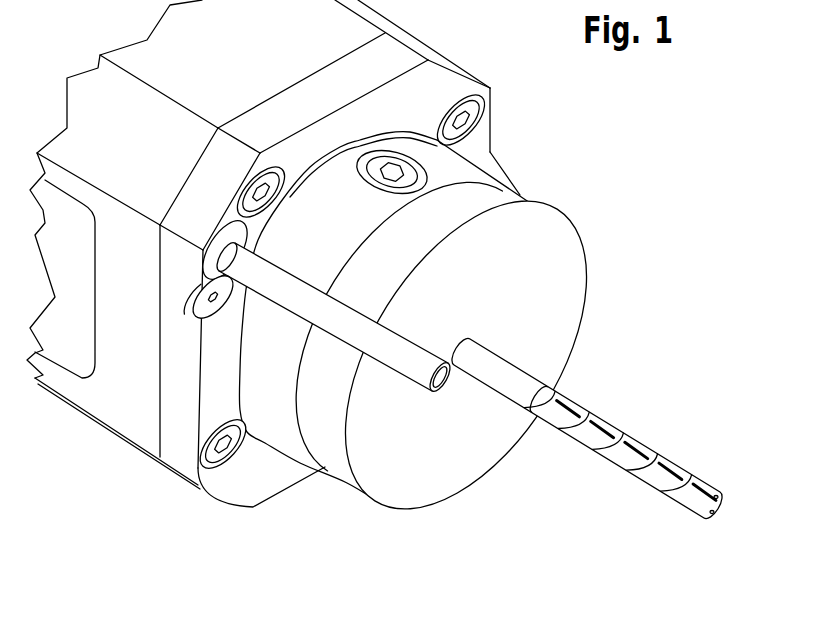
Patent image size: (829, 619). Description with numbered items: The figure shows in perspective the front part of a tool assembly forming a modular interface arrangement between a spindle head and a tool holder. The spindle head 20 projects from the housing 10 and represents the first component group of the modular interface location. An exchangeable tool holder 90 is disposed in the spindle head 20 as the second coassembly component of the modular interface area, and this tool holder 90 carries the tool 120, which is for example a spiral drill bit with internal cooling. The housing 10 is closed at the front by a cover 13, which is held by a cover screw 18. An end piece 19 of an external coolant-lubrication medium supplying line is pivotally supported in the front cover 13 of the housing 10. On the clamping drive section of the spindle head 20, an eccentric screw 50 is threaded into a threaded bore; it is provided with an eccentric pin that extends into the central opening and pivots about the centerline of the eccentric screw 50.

The housing 10 is at (130, 417).
The cover 13 is at (248, 480).
The cover screw 18 is at (212, 460).
The end piece 19 is at (379, 350).
The spindle head 20 is at (291, 455).
The eccentric screw 50 is at (420, 172).
The tool holder 90 is at (437, 518).
The tool 120 is at (618, 463).